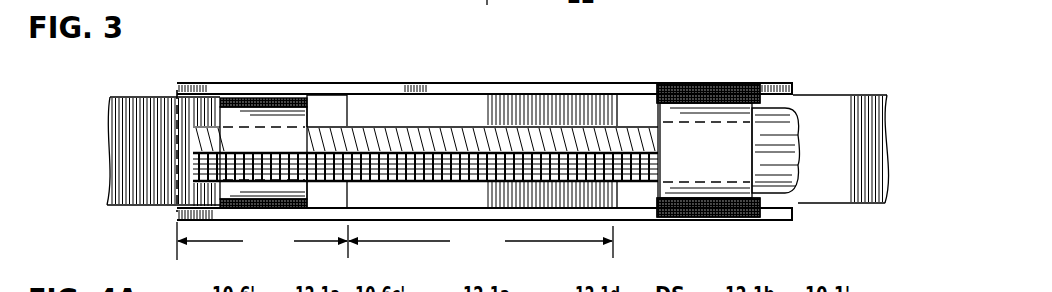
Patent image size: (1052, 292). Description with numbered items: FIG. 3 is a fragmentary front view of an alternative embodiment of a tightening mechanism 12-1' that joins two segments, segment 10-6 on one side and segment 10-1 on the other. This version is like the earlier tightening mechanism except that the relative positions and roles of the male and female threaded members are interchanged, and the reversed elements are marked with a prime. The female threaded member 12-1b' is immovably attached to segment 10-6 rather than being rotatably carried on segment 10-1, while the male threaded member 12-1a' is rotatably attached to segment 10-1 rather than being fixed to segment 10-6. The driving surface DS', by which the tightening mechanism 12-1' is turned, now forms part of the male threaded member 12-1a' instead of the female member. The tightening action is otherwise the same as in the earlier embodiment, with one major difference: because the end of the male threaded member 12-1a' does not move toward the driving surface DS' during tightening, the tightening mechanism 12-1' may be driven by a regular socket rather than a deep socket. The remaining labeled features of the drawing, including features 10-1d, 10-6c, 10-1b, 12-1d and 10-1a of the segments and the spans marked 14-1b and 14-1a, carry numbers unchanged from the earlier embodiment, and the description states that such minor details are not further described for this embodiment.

The tightening mechanism 12-1' is at (484, 123).
The segment 10-6 is at (142, 97).
The housing bottom wall portion 10-1d is at (175, 212).
The female threaded member 12-1b' is at (536, 140).
The driving surface DS' is at (786, 221).
The cable end piece 10-6c is at (352, 97).
The male threaded member 12-1a' is at (425, 117).
The segment 10-1 is at (893, 48).
The cable jacket end / filler 10-1b is at (718, 84).
The inner sleeve 12-1d is at (700, 190).
The optical fiber cable (right) 10-1a is at (835, 95).
The length dimension 14-1b is at (262, 241).
The length dimension 14-1a is at (481, 242).